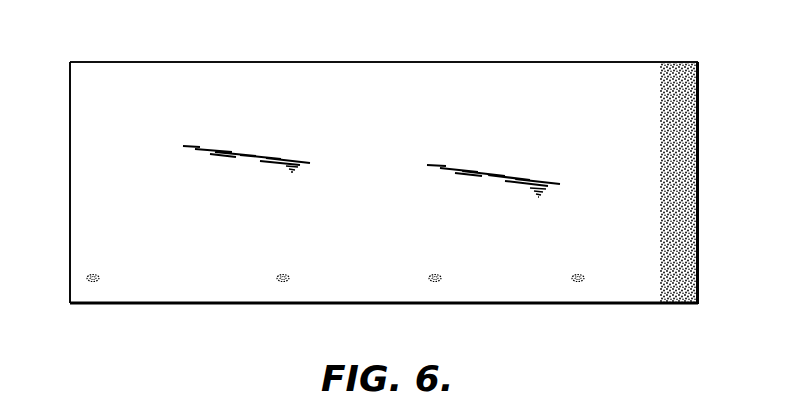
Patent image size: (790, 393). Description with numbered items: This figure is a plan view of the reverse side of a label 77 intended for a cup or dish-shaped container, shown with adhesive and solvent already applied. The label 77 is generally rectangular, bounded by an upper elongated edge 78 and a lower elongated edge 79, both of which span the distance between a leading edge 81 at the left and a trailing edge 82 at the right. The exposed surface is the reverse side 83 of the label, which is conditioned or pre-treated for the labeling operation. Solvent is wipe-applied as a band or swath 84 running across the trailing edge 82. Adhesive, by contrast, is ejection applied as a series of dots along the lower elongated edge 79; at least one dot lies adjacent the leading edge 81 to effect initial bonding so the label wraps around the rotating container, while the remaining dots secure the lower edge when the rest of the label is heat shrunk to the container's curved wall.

The label 77 is at (172, 42).
The upper elongated edge 78 is at (396, 62).
The lower elongated edge 79 is at (362, 305).
The leading edge 81 is at (69, 180).
The trailing edge 82 is at (698, 130).
The reverse side 83 is at (386, 186).
The band of solvent 84 is at (676, 218).